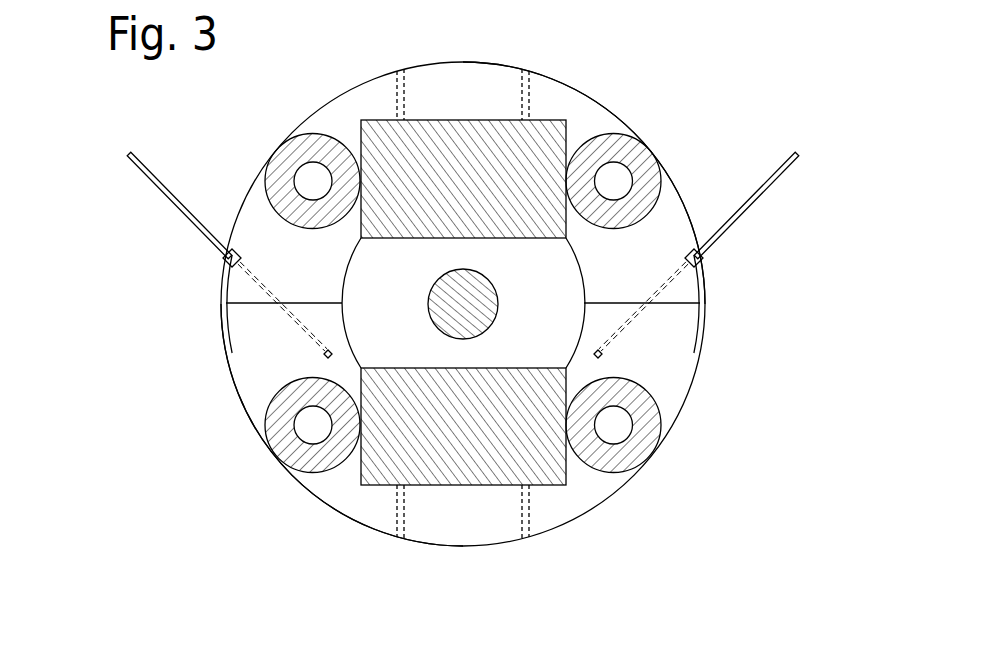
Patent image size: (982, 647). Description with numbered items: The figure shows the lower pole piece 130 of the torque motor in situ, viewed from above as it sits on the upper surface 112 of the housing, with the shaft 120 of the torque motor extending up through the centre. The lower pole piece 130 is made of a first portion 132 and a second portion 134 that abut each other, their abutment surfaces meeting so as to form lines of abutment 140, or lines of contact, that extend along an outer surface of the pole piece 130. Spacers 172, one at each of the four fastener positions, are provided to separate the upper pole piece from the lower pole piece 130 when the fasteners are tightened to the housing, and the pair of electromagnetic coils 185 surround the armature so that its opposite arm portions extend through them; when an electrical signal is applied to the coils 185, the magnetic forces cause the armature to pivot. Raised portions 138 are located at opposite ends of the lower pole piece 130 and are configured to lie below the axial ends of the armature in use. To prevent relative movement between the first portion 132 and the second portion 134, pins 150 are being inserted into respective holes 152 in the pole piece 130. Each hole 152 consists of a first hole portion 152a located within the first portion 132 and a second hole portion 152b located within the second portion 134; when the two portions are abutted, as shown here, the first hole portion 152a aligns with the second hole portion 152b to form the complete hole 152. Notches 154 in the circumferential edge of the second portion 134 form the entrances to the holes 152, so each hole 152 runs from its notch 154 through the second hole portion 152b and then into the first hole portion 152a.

The upper surface 112 is at (357, 342).
The shaft 120 is at (465, 287).
The lower pole piece 130 is at (735, 428).
The first portion 132 is at (355, 502).
The second portion 134 is at (563, 107).
The raised portions 138 is at (458, 92).
The lines of abutment 140 is at (300, 303).
The pins 150 is at (160, 193).
The holes 152 is at (457, 277).
The first hole portion 152a is at (315, 333).
The second hole portion 152b is at (262, 268).
The notches 154 is at (226, 259).
The spacers 172 is at (300, 148).
The electromagnetic coils 185 is at (427, 175).